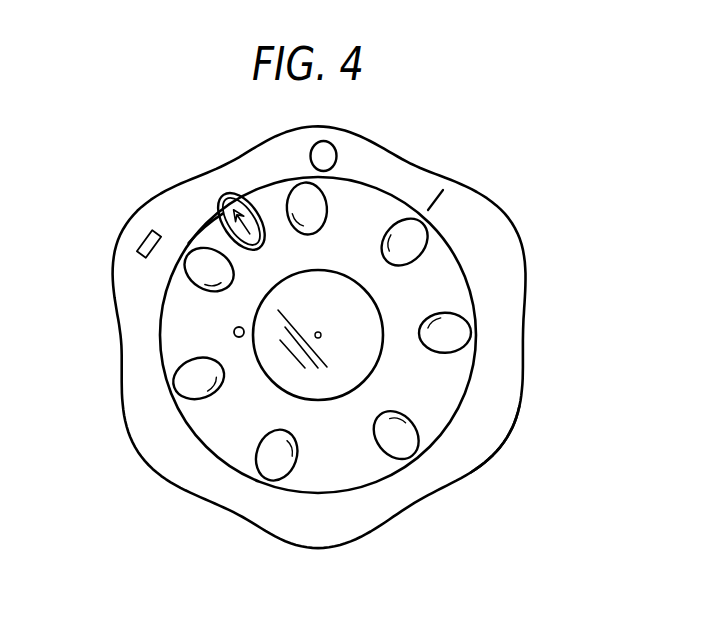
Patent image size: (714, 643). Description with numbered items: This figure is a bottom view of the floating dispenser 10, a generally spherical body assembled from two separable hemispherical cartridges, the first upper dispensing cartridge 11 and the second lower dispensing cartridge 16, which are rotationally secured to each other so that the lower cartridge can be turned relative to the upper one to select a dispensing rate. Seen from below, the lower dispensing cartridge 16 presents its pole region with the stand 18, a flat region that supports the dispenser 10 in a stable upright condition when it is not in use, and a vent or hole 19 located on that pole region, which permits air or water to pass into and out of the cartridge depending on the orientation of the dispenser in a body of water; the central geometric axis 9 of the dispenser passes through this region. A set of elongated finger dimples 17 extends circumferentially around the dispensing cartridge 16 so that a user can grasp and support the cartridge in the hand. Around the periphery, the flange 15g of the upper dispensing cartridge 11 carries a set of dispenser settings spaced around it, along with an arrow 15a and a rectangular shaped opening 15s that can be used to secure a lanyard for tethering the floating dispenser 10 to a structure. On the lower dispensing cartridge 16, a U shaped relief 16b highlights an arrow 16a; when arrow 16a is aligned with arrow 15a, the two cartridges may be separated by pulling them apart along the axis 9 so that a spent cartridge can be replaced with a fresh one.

The geometric axis 9 is at (316, 337).
The dispenser 10 is at (514, 177).
The first upper dispensing cartridge 11 is at (497, 453).
The arrow 15a is at (228, 200).
The flange 15g is at (503, 408).
The rectangular shaped opening 15s is at (140, 244).
The second lower dispensing cartridge 16 is at (417, 287).
The arrow 16a is at (251, 211).
The U shaped relief 16b is at (214, 243).
The elongated finger dimples 17 is at (440, 345).
The stand 18 is at (340, 288).
The vent or hole 19 is at (233, 333).